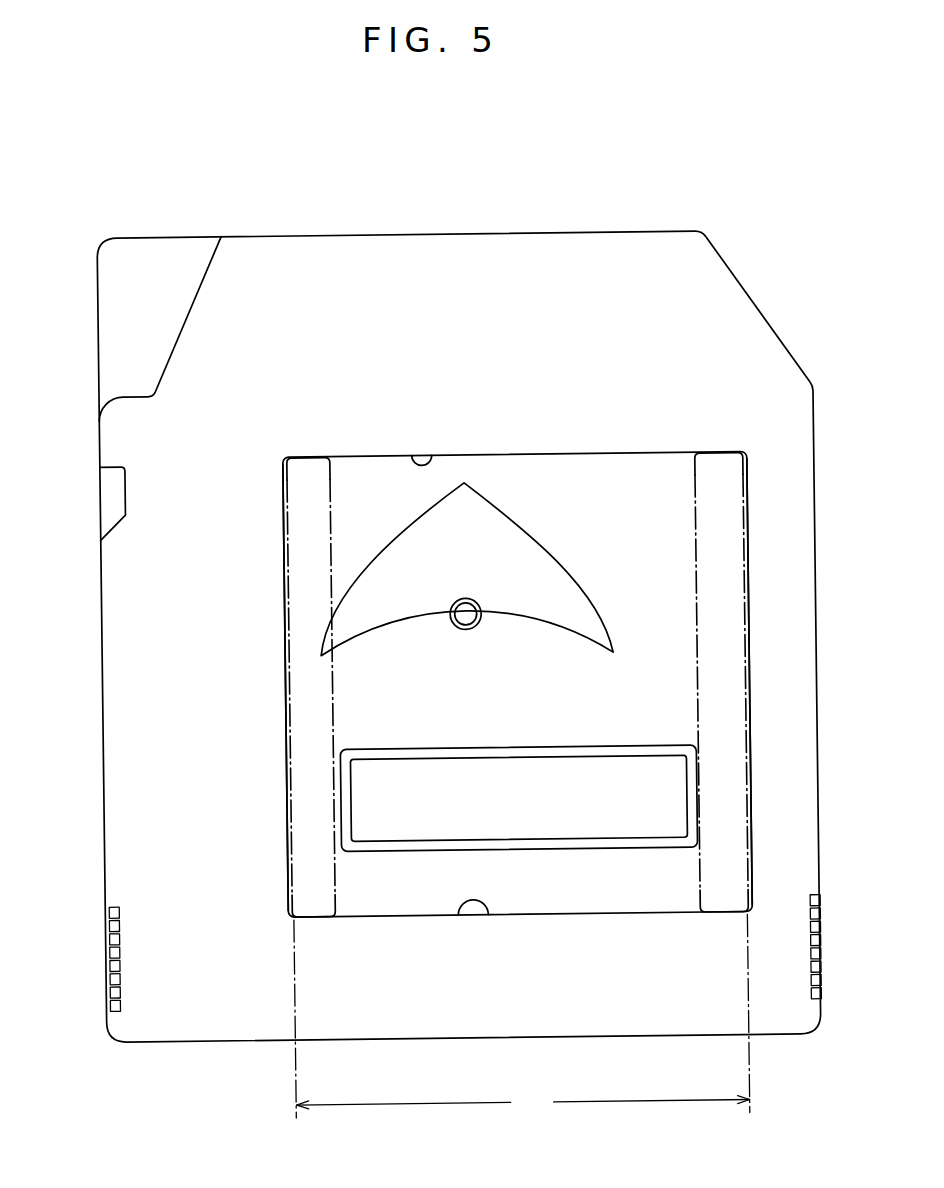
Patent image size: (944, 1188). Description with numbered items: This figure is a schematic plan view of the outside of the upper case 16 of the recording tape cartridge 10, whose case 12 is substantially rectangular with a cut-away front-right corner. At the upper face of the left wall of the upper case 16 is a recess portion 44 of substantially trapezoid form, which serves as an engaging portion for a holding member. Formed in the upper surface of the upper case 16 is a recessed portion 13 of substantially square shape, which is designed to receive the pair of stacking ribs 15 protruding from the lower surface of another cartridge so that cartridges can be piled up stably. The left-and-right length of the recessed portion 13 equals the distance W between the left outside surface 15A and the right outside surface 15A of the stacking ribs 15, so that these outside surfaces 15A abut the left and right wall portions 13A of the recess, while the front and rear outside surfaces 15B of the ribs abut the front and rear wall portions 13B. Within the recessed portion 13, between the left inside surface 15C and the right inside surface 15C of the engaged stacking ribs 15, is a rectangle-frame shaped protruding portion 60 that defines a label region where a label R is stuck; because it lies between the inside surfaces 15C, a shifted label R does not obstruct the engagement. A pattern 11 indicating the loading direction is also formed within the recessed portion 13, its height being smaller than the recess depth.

The recording tape cartridge 10 is at (594, 178).
The pattern 11 is at (487, 512).
The case 12 is at (147, 757).
The recessed portion 13 is at (577, 481).
The wall portion 13A is at (285, 603).
The wall portion 13B is at (428, 455).
The stacking rib 15 is at (319, 463).
The outside surface 15A is at (287, 722).
The outside surface 15B is at (296, 458).
The inside surface 15C is at (338, 727).
The upper case 16 is at (133, 856).
The recess portion 44 is at (121, 497).
The protruding portion 60 is at (630, 836).
The label R is at (418, 828).
The distance W is at (522, 1017).